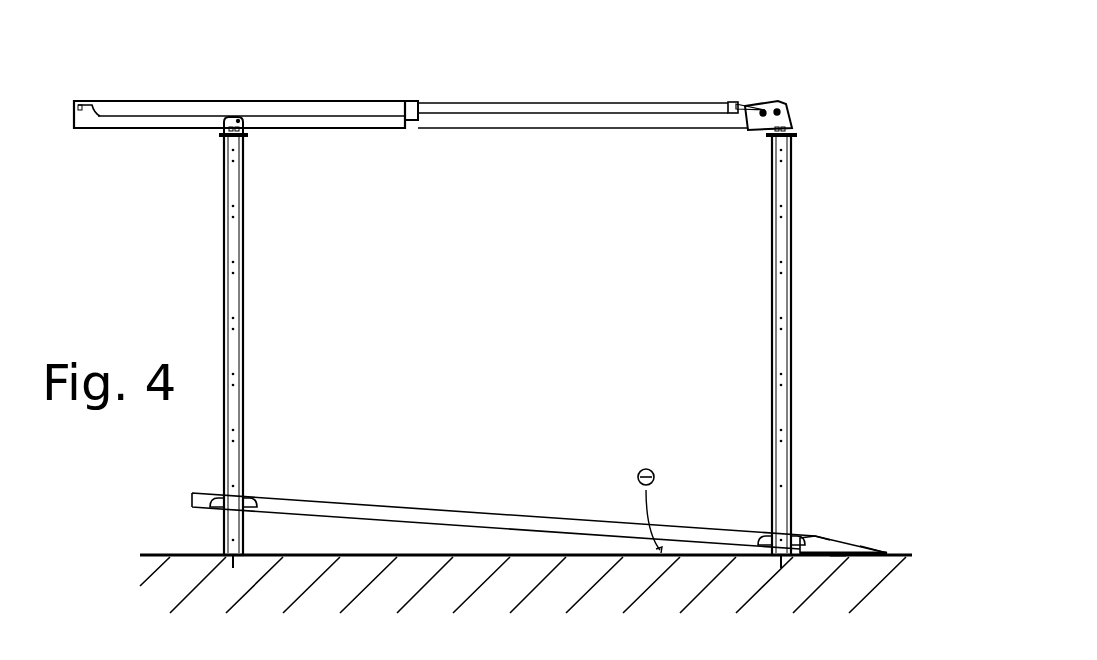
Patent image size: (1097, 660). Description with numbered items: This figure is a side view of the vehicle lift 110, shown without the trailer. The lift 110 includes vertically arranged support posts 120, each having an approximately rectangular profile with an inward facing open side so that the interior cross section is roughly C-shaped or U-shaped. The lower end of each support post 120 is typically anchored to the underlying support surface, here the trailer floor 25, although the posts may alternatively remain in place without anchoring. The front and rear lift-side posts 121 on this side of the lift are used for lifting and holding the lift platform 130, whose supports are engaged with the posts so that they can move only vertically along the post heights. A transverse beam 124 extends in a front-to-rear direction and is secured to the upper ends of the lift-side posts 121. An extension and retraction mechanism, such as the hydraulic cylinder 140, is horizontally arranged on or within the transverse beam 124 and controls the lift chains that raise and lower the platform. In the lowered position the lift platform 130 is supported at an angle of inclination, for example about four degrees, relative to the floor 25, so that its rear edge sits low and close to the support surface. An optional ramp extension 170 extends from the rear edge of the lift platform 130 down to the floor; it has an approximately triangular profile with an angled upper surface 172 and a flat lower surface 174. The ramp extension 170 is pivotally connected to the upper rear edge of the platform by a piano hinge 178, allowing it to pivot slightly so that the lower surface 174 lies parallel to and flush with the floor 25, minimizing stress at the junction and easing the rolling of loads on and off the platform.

The vehicle lift 110 is at (818, 96).
The hydraulic cylinder 140 is at (355, 108).
The transverse beam 124 is at (390, 118).
The support post 120 is at (243, 456).
The lift-side post 121 is at (236, 367).
The lift platform 130 is at (455, 512).
The ramp extension 170 is at (840, 540).
The angled upper surface 172 is at (865, 548).
The piano hinge 178 is at (825, 538).
The flat lower surface 174 is at (838, 558).
The trailer floor 25 is at (345, 600).